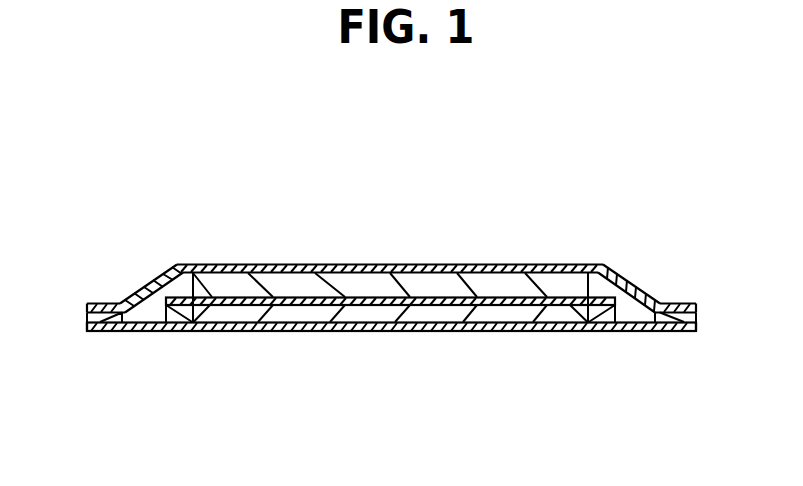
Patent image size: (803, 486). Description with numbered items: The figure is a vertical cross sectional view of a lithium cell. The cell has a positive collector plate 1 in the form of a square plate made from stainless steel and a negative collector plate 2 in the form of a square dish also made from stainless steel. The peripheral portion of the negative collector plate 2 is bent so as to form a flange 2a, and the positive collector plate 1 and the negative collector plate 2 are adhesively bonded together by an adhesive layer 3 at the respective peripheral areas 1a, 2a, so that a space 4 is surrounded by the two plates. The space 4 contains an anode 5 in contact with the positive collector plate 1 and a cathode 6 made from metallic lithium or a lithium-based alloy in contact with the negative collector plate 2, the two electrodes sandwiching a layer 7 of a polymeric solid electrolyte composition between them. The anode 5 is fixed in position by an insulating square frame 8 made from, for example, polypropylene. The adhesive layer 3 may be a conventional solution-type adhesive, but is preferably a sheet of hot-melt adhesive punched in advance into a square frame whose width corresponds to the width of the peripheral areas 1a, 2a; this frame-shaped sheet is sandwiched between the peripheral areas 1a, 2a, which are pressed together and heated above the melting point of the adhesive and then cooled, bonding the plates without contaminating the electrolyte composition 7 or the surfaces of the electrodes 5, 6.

The positive collector plate 1 is at (480, 328).
The peripheral area of the positive collector plate 1a is at (107, 333).
The negative collector plate 2 is at (503, 265).
The flange 2a is at (111, 303).
The adhesive layer 3 is at (87, 313).
The space 4 is at (155, 300).
The anode 5 is at (367, 312).
The cathode 6 is at (425, 287).
The layer of polymeric solid electrolyte composition 7 is at (247, 297).
The insulating square frame 8 is at (180, 323).